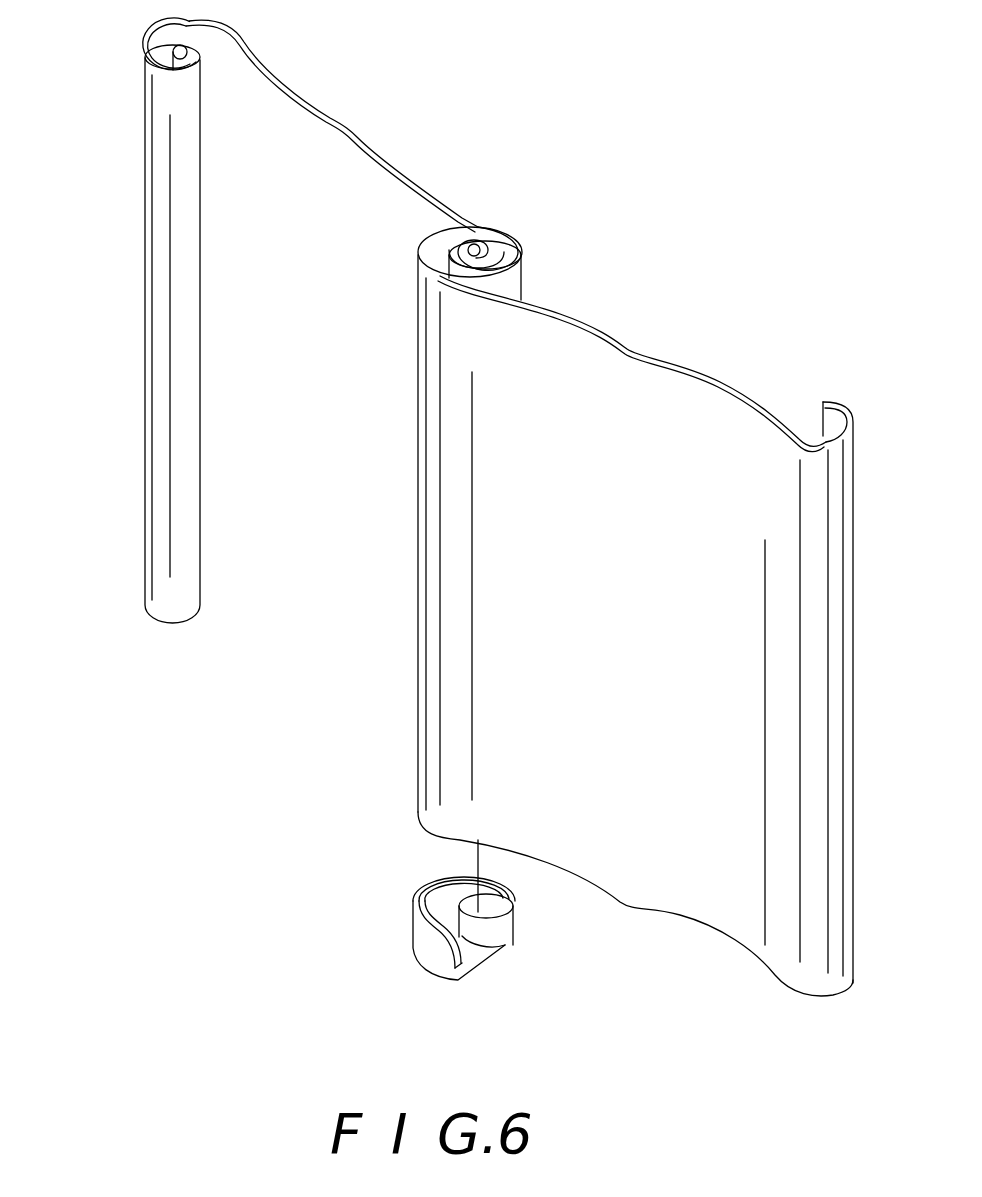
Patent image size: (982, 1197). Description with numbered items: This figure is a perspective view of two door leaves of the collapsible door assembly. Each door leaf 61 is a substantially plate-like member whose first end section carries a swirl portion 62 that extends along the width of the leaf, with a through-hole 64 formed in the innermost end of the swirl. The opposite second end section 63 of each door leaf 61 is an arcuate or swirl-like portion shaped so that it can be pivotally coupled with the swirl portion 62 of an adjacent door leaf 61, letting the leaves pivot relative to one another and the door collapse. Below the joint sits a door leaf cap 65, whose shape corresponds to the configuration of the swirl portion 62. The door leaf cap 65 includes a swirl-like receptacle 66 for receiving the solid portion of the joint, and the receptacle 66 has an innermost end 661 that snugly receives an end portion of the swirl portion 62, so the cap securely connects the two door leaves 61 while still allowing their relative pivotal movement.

The door leaf 61 is at (323, 142).
The swirl portion 62 is at (158, 287).
The second end section 63 is at (525, 265).
The through-hole 64 is at (170, 55).
The door leaf cap 65 is at (415, 946).
The receptacle 66 is at (430, 882).
The innermost end 661 is at (515, 905).